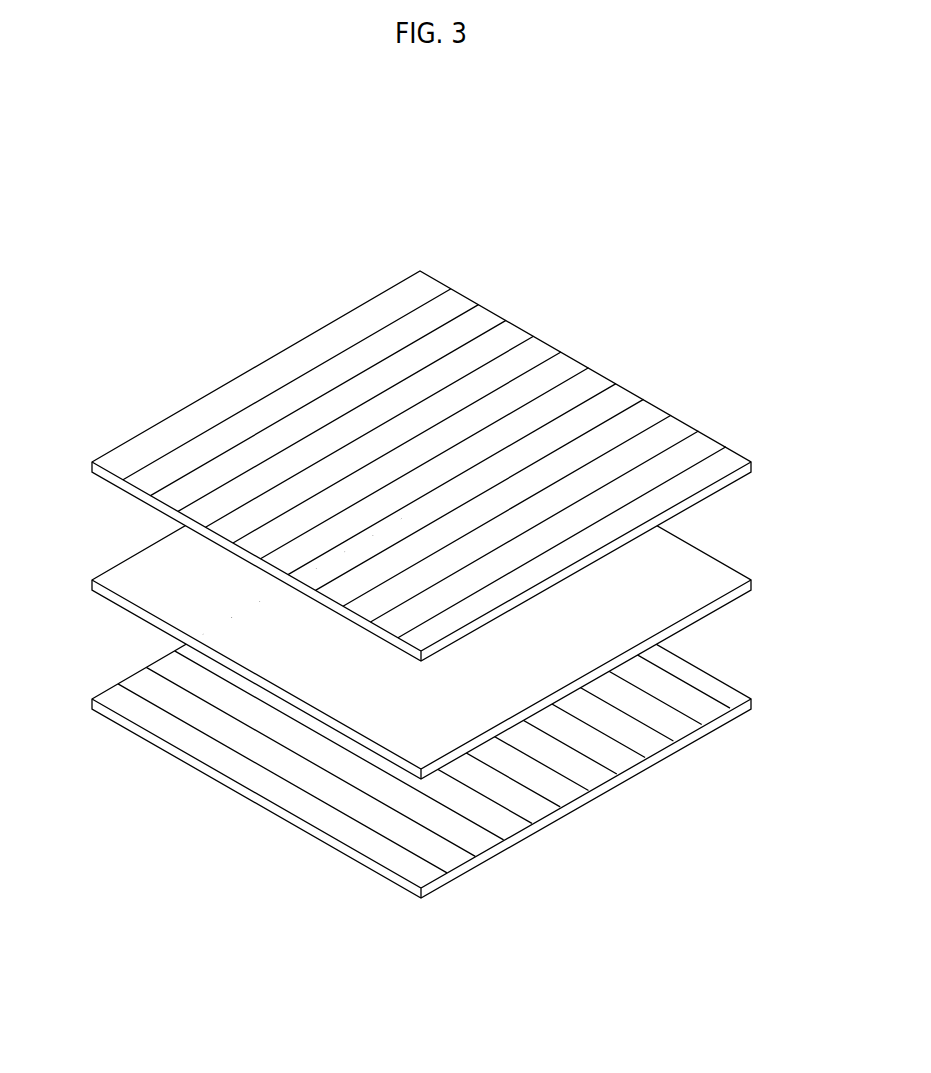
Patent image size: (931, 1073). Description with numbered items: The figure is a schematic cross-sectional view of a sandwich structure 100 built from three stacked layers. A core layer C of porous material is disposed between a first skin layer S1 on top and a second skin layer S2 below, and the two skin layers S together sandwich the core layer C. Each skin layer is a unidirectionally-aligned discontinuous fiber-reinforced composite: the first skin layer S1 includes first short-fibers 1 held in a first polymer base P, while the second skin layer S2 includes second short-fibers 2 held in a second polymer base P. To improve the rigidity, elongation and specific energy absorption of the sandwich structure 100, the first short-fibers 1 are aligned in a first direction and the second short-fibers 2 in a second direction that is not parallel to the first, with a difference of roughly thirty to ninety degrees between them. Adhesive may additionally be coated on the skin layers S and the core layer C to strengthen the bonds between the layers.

The sandwich structure 100 is at (236, 322).
The first short-fibers 1 is at (565, 378).
The second short-fibers 2 is at (492, 832).
The polymer base P is at (592, 388).
The core layer C is at (710, 568).
The first skin layer S1 is at (647, 302).
The second skin layer S2 is at (542, 926).
The skin layers S is at (688, 960).